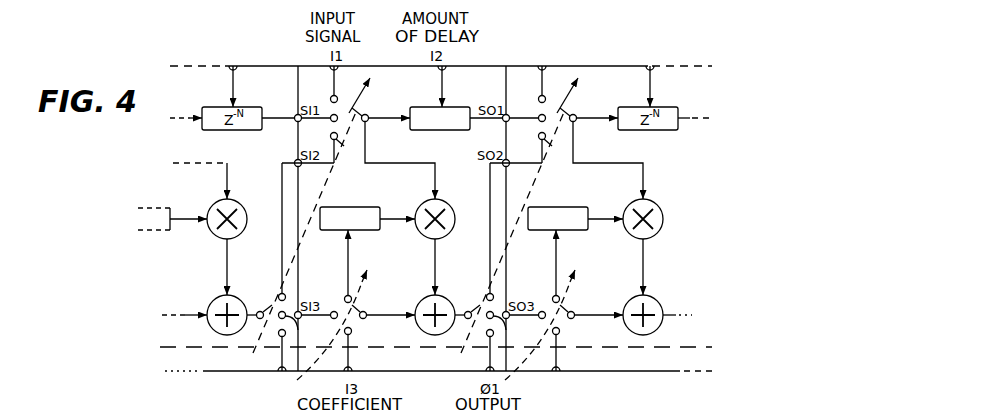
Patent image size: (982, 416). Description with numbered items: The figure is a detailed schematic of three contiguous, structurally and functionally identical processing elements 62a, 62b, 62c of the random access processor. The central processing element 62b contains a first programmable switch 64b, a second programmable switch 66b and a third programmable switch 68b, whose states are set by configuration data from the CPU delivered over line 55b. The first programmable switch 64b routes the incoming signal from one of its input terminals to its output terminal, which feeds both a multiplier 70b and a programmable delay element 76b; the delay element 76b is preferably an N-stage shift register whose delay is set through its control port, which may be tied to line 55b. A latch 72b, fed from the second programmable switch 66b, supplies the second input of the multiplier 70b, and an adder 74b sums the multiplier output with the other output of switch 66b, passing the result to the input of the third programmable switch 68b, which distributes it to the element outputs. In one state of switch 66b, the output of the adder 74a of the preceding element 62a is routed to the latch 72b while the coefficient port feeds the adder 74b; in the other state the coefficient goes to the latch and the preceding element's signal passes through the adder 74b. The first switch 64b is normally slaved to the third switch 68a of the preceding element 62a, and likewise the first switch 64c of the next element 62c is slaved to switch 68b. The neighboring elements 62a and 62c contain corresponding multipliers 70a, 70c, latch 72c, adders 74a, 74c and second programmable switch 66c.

The configuration data line 55b is at (302, 373).
The preceding contiguous processing element 62a is at (210, 374).
The processing element 62b is at (409, 374).
The next contiguous processing element 62c is at (598, 374).
The first programmable switch 64b is at (349, 112).
The first programmable switch 64c is at (557, 112).
The second programmable switch 66b is at (366, 320).
The second programmable switch 66c is at (574, 320).
The third programmable switch 68a is at (261, 319).
The third programmable switch 68b is at (469, 319).
The multiplier 70a is at (238, 190).
The multiplier 70b is at (456, 191).
The multiplier 70c is at (664, 191).
The latch 72b is at (345, 206).
The latch 72c is at (553, 206).
The adder 74a is at (210, 306).
The adder 74b is at (421, 296).
The adder 74c is at (629, 296).
The programmable delay element 76b is at (458, 106).